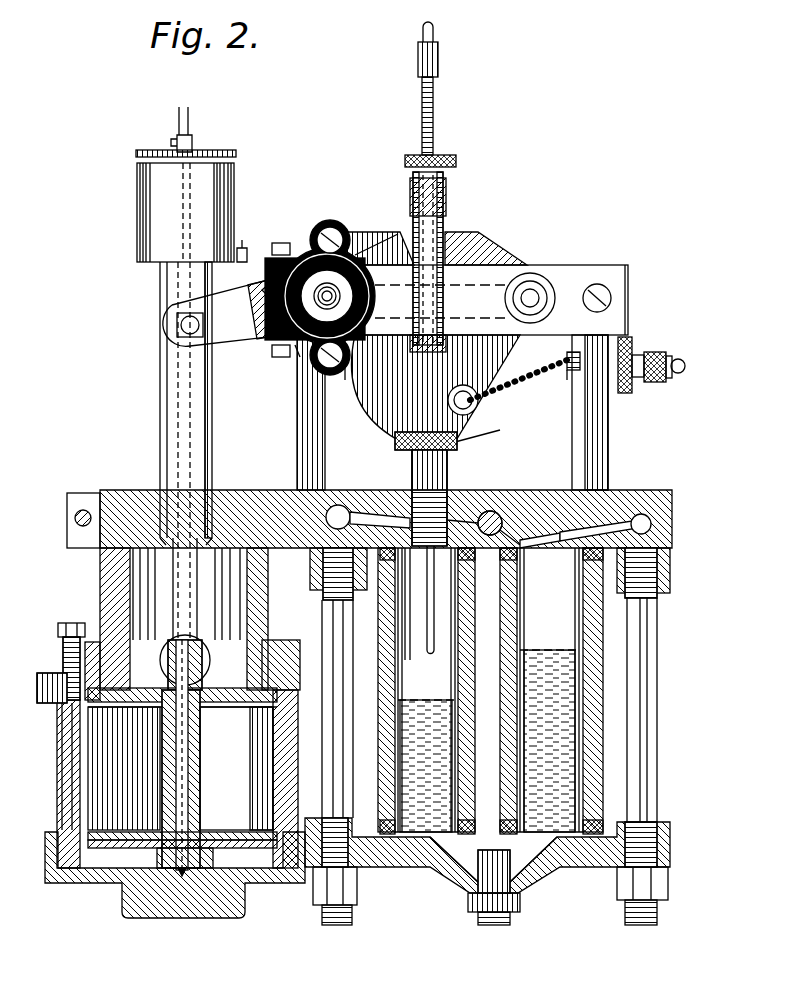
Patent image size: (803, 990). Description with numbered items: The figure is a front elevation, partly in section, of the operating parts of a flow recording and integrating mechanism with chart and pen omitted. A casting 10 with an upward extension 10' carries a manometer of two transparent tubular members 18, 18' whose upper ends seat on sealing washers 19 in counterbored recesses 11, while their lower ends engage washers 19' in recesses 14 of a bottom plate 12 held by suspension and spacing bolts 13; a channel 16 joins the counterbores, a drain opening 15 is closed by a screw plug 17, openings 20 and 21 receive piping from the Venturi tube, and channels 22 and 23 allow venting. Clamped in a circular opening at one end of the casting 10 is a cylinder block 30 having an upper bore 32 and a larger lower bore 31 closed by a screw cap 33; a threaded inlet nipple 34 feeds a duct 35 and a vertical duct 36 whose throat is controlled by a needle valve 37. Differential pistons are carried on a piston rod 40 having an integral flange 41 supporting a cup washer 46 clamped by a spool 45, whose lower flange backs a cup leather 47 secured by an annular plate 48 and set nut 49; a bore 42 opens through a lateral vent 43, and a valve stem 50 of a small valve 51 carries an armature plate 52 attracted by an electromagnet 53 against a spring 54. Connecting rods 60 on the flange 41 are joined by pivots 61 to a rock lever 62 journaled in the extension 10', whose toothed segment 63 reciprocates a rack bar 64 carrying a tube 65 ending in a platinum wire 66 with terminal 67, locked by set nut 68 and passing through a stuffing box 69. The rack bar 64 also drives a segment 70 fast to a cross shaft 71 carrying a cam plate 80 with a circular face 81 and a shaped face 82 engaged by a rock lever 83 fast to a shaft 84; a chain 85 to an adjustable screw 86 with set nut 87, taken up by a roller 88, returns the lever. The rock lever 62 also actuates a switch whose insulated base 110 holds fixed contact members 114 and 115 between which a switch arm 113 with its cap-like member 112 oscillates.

The casting 10 is at (369, 508).
The upward extension 10' is at (475, 412).
The counterbored recesses 11 is at (517, 513).
The bottom plate 12 is at (600, 873).
The suspension and spacing bolts 13 is at (332, 740).
The counterbored recesses 14 is at (385, 835).
The drain opening 15 is at (487, 868).
The channel 16 is at (458, 850).
The screw plug 17 is at (485, 915).
The tubular member 18 is at (426, 690).
The tubular member 18' is at (551, 690).
The sealing washers 19 is at (504, 503).
The washers 19' is at (480, 691).
The opening 20 is at (577, 492).
The opening 21 is at (375, 512).
The channel 22 is at (651, 524).
The channel 23 is at (338, 505).
The housing flange 30 is at (280, 648).
The lower bore 31 is at (280, 752).
The upper bore 32 is at (240, 603).
The screw cap 33 is at (282, 885).
The threaded inlet nipple 34 is at (50, 705).
The duct 35 is at (95, 710).
The vertical duct 36 is at (70, 790).
The needle valve 37 is at (58, 655).
The piston rod 40 is at (270, 580).
The integral flange 41 is at (200, 675).
The bore 42 is at (192, 757).
The lateral vent 43 is at (205, 655).
The spool 45 is at (163, 768).
The cup washer 46 is at (148, 697).
The cup leather 47 is at (115, 840).
The annular plate 48 is at (130, 848).
The set nut 49 is at (165, 860).
The valve stem 50 is at (190, 785).
The valve 51 is at (183, 878).
The annular plate 52 is at (232, 153).
The electromagnet 53 is at (236, 195).
The spring 54 is at (196, 150).
The connecting rods 60 is at (205, 560).
The pivots 61 is at (172, 325).
The rock lever 62 is at (253, 335).
The toothed segment 63 is at (410, 240).
The rack bar 64 is at (446, 210).
The tube 65 is at (445, 195).
The platinum wire 66 is at (433, 140).
The terminal 67 is at (438, 30).
The set nut 68 is at (456, 161).
The stuffing box 69 is at (447, 468).
The segment 70 is at (518, 265).
The cross shaft 71 is at (533, 298).
The cam plate 80 is at (515, 345).
The circular cam face section 81 is at (478, 425).
The shaped cam face section 82 is at (378, 352).
The rock lever 83 is at (395, 441).
The shaft 84 is at (497, 500).
The chain 85 is at (553, 380).
The adjustable screw 86 is at (640, 355).
The set nut 87 is at (632, 380).
The roller 88 is at (478, 402).
The insulated base 110 is at (335, 240).
The cap-like member 112 is at (298, 355).
The switch arm 113 is at (262, 290).
The fixed contact member 114 is at (275, 245).
The fixed contact member 115 is at (278, 352).